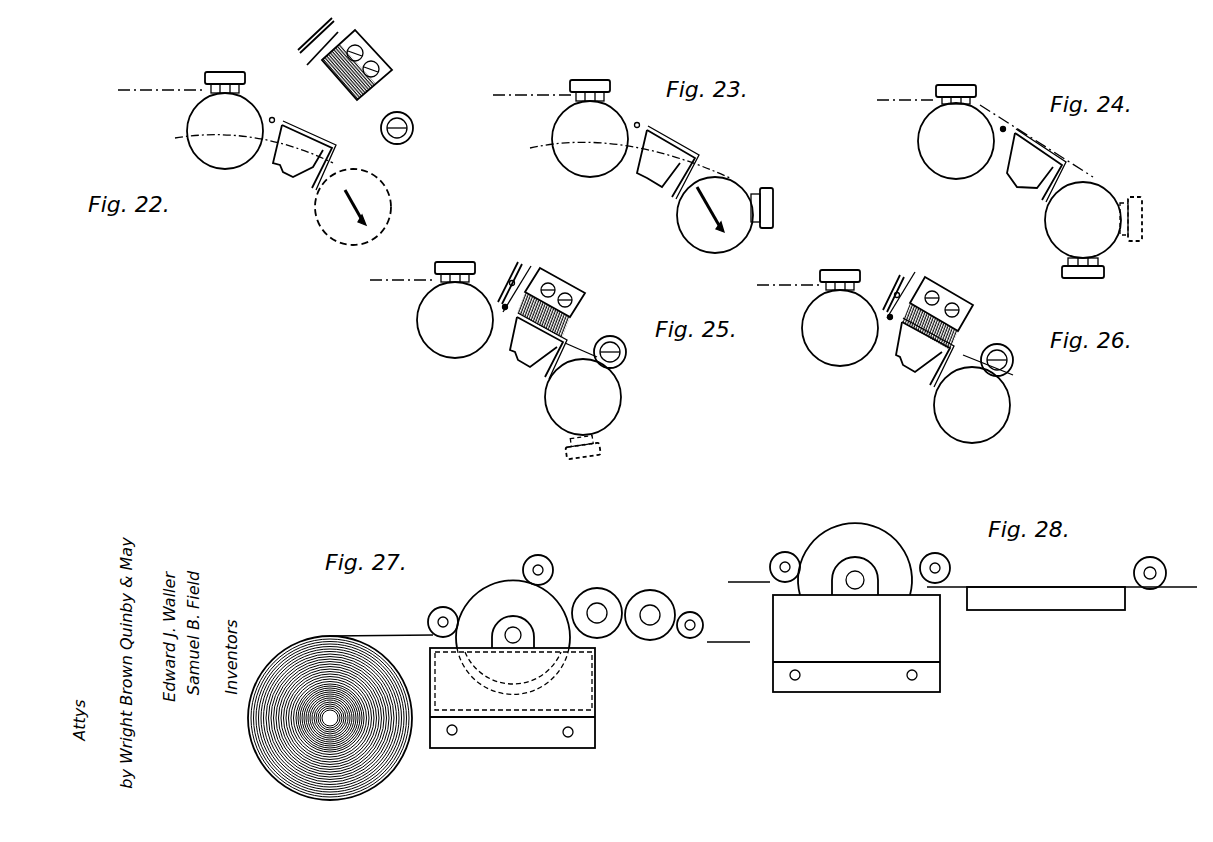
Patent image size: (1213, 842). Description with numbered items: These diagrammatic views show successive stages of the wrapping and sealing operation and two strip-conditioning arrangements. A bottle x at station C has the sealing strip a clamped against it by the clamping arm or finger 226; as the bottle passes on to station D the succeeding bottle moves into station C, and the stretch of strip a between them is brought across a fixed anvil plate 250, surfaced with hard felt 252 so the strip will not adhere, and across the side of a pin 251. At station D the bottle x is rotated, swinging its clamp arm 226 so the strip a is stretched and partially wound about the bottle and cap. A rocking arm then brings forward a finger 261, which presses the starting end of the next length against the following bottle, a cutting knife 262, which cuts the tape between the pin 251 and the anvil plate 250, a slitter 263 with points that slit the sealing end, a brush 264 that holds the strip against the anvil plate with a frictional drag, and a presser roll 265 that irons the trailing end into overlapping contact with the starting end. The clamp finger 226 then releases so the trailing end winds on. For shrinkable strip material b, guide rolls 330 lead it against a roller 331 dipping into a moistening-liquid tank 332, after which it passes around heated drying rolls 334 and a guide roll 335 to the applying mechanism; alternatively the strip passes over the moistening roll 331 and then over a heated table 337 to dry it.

In FIG. 22, the clamping arm or finger 226 is at (229, 72).
In FIG. 23, the clamping arm or finger 226 is at (592, 80).
In FIG. 24, the clamping arm or finger 226 is at (960, 85).
In FIG. 25, the clamping arm or finger 226 is at (460, 262).
In FIG. 26, the clamping arm or finger 226 is at (845, 270).
In FIG. 22, the anvil plate 250 is at (293, 178).
In FIG. 23, the anvil plate 250 is at (645, 175).
In FIG. 24, the anvil plate 250 is at (1012, 181).
In FIG. 25, the anvil plate 250 is at (527, 368).
In FIG. 26, the anvil plate 250 is at (912, 375).
In FIG. 22, the pin 251 is at (274, 117).
In FIG. 23, the pin 251 is at (638, 120).
In FIG. 24, the pin 251 is at (1005, 125).
In FIG. 25, the pin 251 is at (500, 312).
In FIG. 26, the pin 251 is at (885, 322).
In FIG. 22, the hard felt surfacing 252 is at (322, 141).
In FIG. 23, the hard felt surfacing 252 is at (700, 161).
In FIG. 24, the hard felt surfacing 252 is at (1066, 160).
In FIG. 26, the hard felt surfacing 252 is at (897, 358).
In FIG. 25, the finger 261 is at (518, 262).
In FIG. 26, the finger 261 is at (893, 275).
In FIG. 25, the cutting knife 262 is at (535, 268).
In FIG. 26, the cutting knife 262 is at (910, 270).
In FIG. 25, the slitter 263 is at (562, 278).
In FIG. 26, the slitter 263 is at (938, 278).
In FIG. 25, the brush 264 is at (575, 336).
In FIG. 26, the brush 264 is at (955, 345).
In FIG. 25, the presser roll 265 is at (618, 338).
In FIG. 26, the presser roll 265 is at (1013, 375).
In FIG. 27, the guide rolls 330 is at (446, 607).
In FIG. 28, the guide rolls 330 is at (968, 570).
In FIG. 27, the roller 331 is at (496, 590).
In FIG. 28, the roller 331 is at (882, 537).
In FIG. 27, the moistening-liquid-containing tank 332 is at (585, 693).
In FIG. 28, the moistening-liquid-containing tank 332 is at (856, 643).
In FIG. 27, the drying rolls 334 is at (600, 589).
In FIG. 27, the guide roll 335 is at (704, 620).
In FIG. 28, the heated table 337 is at (1055, 603).
In FIG. 27, the strip material b is at (377, 772).
In FIG. 22, the station C is at (188, 122).
In FIG. 23, the station C is at (553, 130).
In FIG. 24, the station C is at (923, 156).
In FIG. 25, the station C is at (428, 345).
In FIG. 26, the station C is at (820, 357).
In FIG. 22, the station D is at (388, 195).
In FIG. 23, the station D is at (680, 220).
In FIG. 24, the station D is at (1052, 230).
In FIG. 25, the station D is at (612, 400).
In FIG. 26, the station D is at (945, 425).
In FIG. 22, the sealing strip a is at (133, 88).
In FIG. 23, the sealing strip a is at (515, 93).
In FIG. 24, the sealing strip a is at (892, 98).
In FIG. 25, the sealing strip a is at (388, 278).
In FIG. 26, the sealing strip a is at (783, 283).
In FIG. 22, the bottle x is at (232, 158).
In FIG. 23, the bottle x is at (695, 236).
In FIG. 24, the bottle x is at (1050, 213).
In FIG. 25, the bottle x is at (418, 306).
In FIG. 26, the bottle x is at (808, 333).